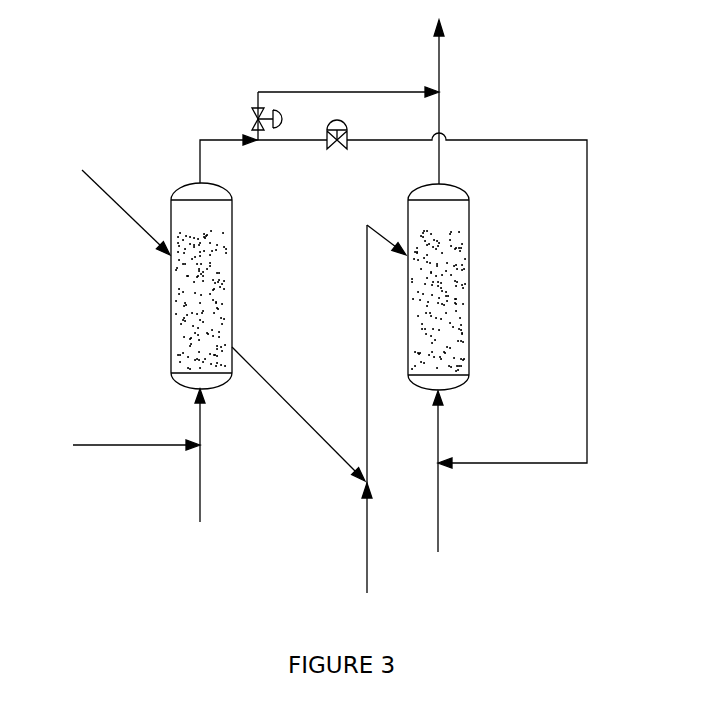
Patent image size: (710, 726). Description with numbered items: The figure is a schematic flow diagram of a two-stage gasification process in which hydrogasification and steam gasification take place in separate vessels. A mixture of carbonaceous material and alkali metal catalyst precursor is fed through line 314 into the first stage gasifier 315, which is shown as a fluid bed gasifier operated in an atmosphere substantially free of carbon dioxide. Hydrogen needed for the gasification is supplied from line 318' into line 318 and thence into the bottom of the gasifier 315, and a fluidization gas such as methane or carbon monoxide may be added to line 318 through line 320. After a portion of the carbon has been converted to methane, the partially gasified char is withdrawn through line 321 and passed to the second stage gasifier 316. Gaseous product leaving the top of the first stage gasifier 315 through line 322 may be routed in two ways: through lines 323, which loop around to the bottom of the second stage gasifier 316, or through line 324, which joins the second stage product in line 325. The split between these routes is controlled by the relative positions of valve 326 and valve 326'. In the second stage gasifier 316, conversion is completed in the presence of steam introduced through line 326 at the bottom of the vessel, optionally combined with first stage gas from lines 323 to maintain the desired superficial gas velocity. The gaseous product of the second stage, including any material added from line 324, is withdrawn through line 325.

The line 314 is at (110, 197).
The first stage gasifier 315 is at (233, 278).
The second stage gasifier 316 is at (470, 297).
The line 318 is at (231, 417).
The line 318' is at (237, 483).
The line 320 is at (137, 445).
The line 321 is at (387, 236).
The line 322 is at (225, 168).
The lines 323 is at (505, 141).
The lines 324 is at (322, 92).
The line 325 is at (440, 62).
The valve 326 is at (361, 314).
The valve 326' is at (335, 157).